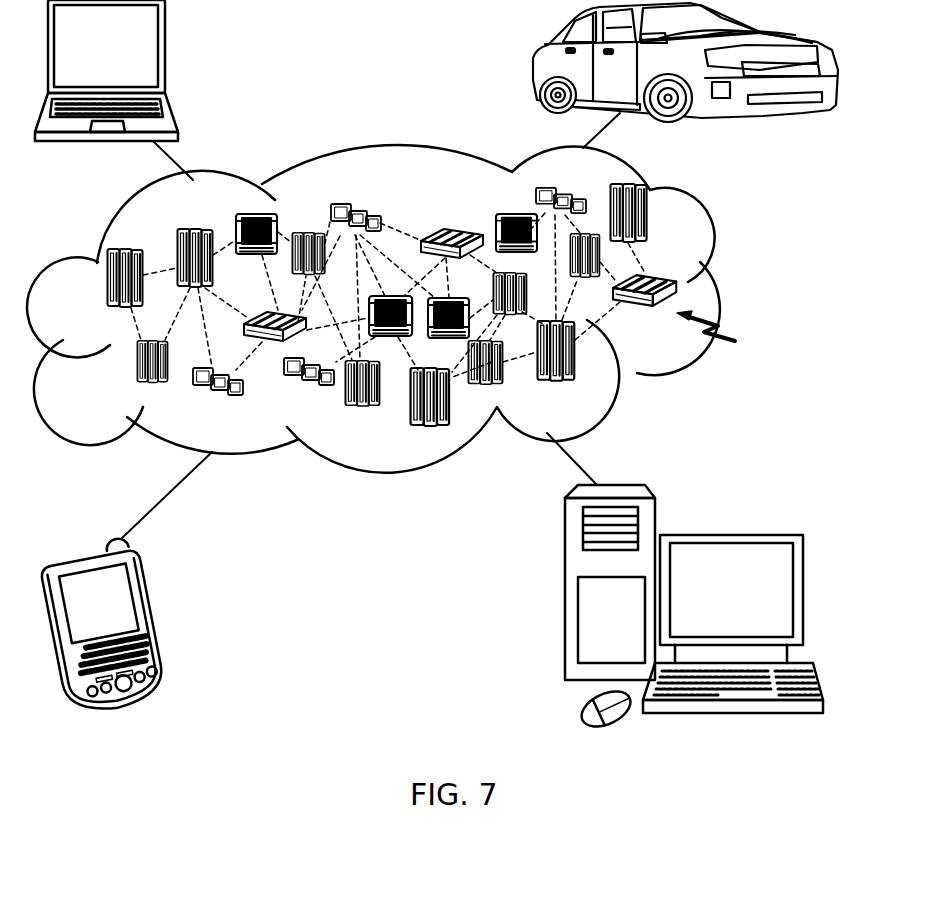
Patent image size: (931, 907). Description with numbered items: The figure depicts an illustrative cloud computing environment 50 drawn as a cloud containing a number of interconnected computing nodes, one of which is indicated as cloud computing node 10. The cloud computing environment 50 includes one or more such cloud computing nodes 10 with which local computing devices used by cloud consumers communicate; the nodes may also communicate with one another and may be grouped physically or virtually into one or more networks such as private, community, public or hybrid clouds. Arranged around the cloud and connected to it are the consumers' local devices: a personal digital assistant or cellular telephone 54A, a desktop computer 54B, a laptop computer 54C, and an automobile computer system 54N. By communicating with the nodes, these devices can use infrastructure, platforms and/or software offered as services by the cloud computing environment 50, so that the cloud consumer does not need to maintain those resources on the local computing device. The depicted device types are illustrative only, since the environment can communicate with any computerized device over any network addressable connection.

The cloud computing node 10 is at (721, 332).
The cloud computing environment 50 is at (729, 289).
The personal digital assistant or cellular telephone 54A is at (158, 615).
The desktop computer 54B is at (728, 535).
The laptop computer 54C is at (167, 53).
The automobile computer system 54N is at (543, 66).